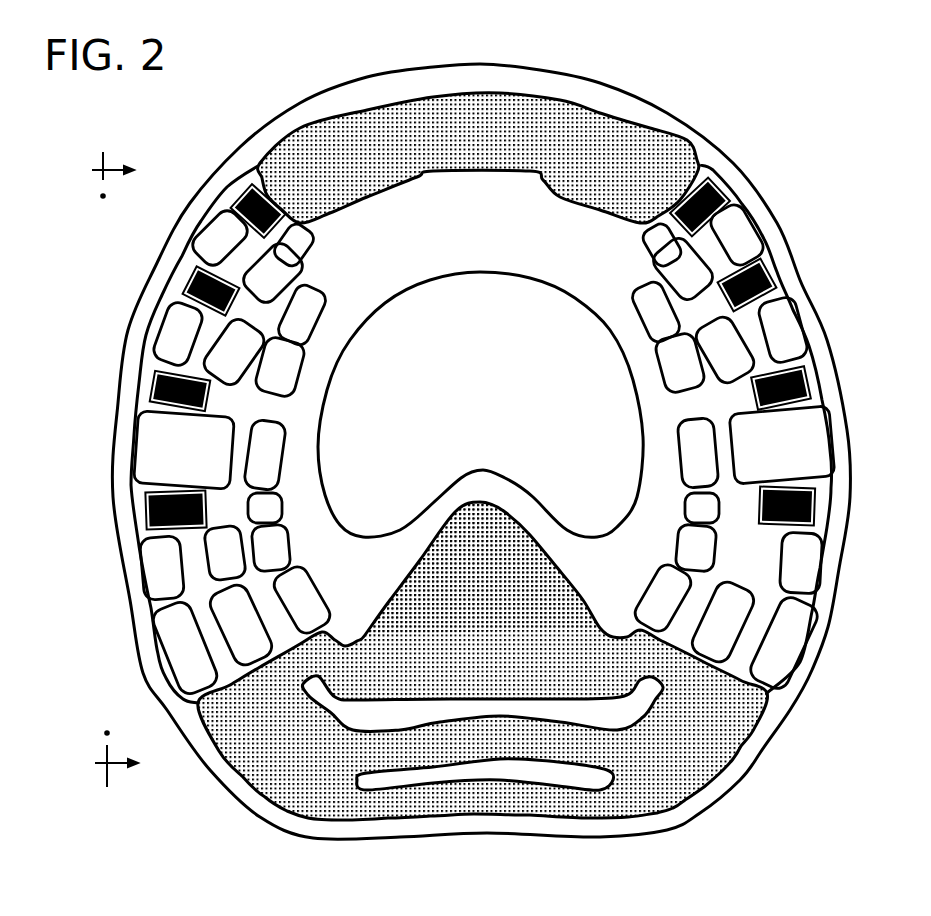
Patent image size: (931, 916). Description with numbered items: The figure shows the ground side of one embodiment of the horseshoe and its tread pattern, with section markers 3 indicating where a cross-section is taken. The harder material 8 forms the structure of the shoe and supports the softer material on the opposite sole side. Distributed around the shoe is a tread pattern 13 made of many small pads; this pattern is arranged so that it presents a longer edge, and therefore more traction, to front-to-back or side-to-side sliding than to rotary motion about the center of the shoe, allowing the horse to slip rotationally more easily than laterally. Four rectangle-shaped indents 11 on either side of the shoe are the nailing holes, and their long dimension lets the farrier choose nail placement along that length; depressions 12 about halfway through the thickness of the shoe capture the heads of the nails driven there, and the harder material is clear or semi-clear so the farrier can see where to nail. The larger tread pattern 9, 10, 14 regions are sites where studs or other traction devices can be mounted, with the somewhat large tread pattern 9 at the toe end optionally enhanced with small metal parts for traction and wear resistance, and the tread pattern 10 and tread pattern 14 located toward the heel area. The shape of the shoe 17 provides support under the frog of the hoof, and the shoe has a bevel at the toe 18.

The harder material 8 is at (540, 238).
The tread pattern at the toe end 9 is at (667, 165).
The larger tread pattern 10 is at (713, 737).
The nailing hole 11 is at (777, 280).
The depression 12 is at (707, 173).
The tread pattern 13 is at (797, 332).
The larger tread pattern 14 is at (807, 440).
The shape of the shoe providing frog support 17 is at (478, 537).
The bevel at the toe 18 is at (507, 75).
The section line 3- 3 is at (115, 470).